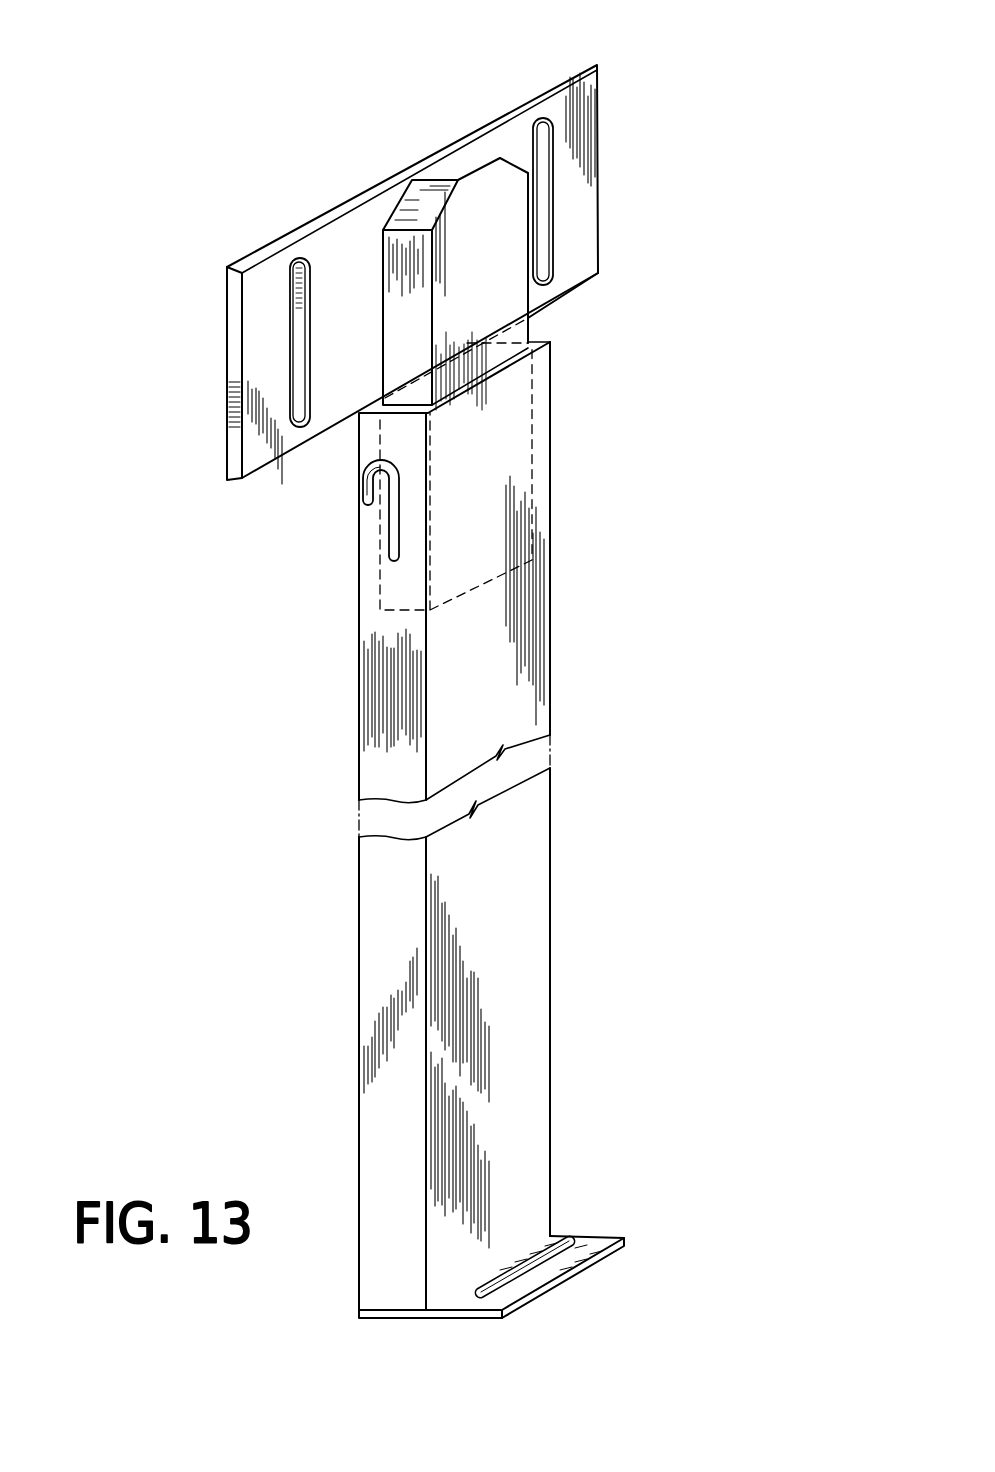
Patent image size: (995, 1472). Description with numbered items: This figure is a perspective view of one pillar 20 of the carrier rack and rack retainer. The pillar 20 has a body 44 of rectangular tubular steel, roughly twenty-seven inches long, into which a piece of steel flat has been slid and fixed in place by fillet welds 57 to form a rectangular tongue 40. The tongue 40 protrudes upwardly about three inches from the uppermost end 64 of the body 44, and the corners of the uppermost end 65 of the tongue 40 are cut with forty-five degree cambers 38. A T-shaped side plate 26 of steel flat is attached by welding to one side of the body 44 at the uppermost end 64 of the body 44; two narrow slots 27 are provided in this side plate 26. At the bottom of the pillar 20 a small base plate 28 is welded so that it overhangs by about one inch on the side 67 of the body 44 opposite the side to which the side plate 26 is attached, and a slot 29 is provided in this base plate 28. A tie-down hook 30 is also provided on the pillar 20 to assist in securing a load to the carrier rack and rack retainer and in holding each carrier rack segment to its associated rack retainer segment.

The pillar 20 is at (587, 647).
The side plate 26 is at (558, 107).
The slots 27 is at (292, 322).
The base plate 28 is at (600, 1238).
The slot 29 is at (553, 1240).
The tie-down hook 30 is at (393, 522).
The cambers 38 is at (410, 202).
The tongue 40 is at (407, 291).
The body 44 is at (521, 893).
The fillet welds 57 is at (535, 342).
The uppermost end of the body 64 is at (358, 460).
The uppermost end of the tongue 65 is at (480, 227).
The side of the body 67 is at (518, 1088).